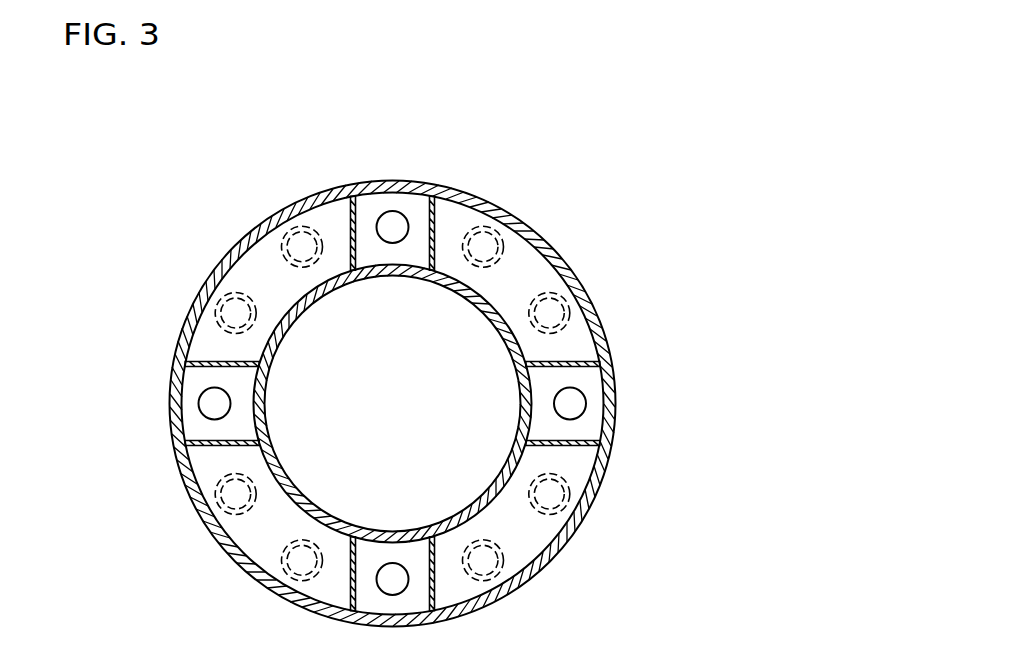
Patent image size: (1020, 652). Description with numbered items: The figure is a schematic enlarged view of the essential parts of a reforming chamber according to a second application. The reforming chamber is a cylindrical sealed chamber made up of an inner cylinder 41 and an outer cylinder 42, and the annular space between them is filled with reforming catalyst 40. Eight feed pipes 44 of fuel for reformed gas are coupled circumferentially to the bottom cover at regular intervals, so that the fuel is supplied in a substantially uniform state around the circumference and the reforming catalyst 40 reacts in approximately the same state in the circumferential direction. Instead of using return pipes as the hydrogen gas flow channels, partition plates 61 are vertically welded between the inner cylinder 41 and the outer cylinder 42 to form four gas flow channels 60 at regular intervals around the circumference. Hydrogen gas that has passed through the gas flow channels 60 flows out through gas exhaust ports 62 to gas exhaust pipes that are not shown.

The reforming catalyst 40 is at (540, 273).
The inner cylinder 41 is at (455, 295).
The outer cylinder 42 is at (453, 193).
The feed pipes of fuel for reformed gas 44 is at (592, 304).
The gas flow channels 60 is at (597, 420).
The partition plates 61 is at (587, 361).
The gas exhaust ports 62 is at (570, 406).